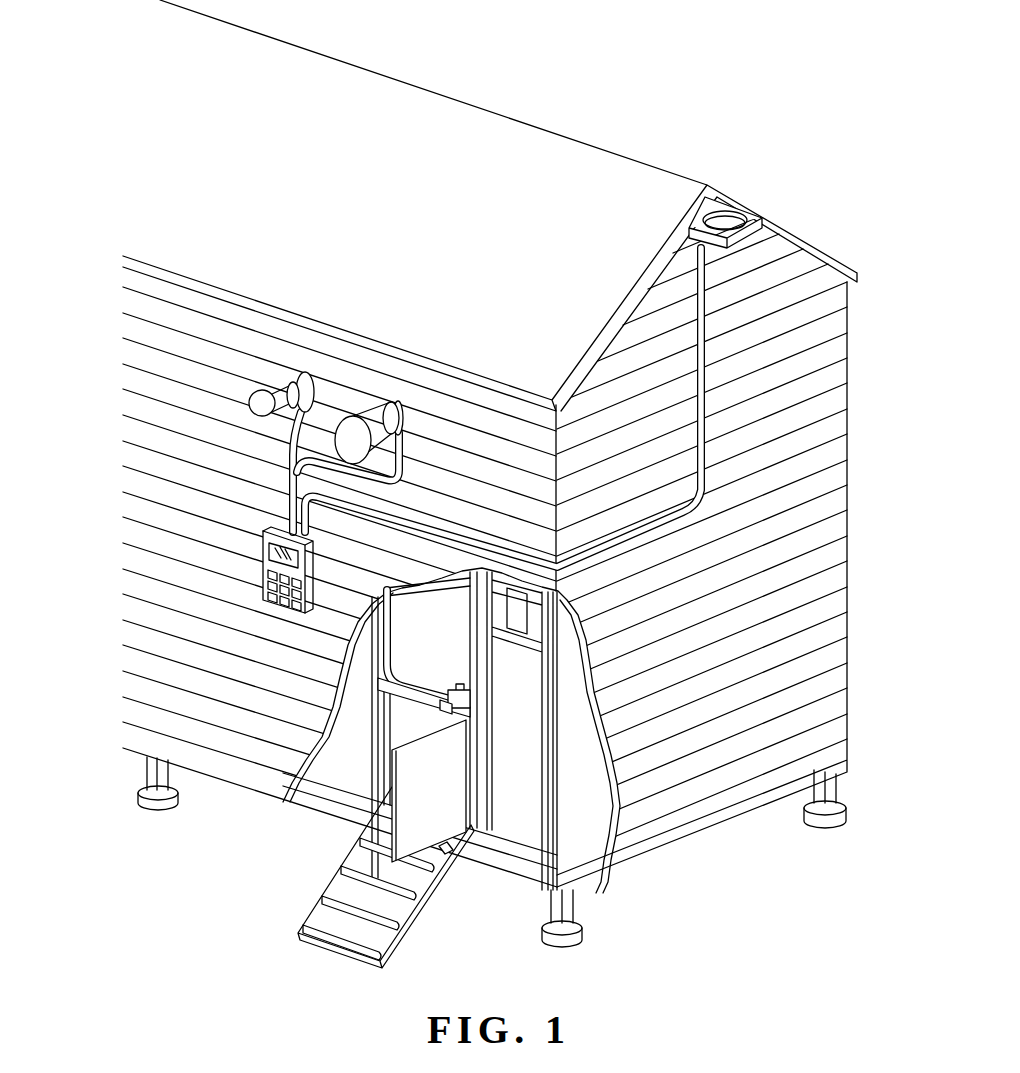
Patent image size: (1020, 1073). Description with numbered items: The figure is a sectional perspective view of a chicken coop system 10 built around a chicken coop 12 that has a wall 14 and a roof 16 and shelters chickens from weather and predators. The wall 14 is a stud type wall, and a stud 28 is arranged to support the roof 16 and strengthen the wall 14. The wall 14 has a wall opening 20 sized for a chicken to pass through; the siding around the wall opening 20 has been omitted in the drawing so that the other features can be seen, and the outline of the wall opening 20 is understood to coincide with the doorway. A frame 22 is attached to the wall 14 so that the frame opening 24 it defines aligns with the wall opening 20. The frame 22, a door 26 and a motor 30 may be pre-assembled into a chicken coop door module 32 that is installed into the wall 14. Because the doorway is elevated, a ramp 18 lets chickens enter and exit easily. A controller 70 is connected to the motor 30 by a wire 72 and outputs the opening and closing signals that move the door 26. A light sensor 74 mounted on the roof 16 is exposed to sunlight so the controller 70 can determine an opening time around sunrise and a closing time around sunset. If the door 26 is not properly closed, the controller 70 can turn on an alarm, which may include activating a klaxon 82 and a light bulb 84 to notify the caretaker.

The chicken coop system 10 is at (493, 443).
The chicken coop 12 is at (846, 310).
The wall 14 is at (147, 718).
The roof 16 is at (512, 148).
The ramp 18 is at (326, 920).
The wall opening 20 is at (413, 733).
The frame 22 is at (380, 713).
The frame opening 24 is at (423, 713).
The door 26 is at (422, 825).
The stud 28 is at (483, 755).
The motor 30 is at (452, 703).
The chicken coop door module 32 is at (448, 672).
The controller 70 is at (277, 605).
The wire 72 is at (388, 637).
The light sensor 74 is at (715, 217).
The klaxon 82 is at (368, 425).
The light bulb 84 is at (261, 392).